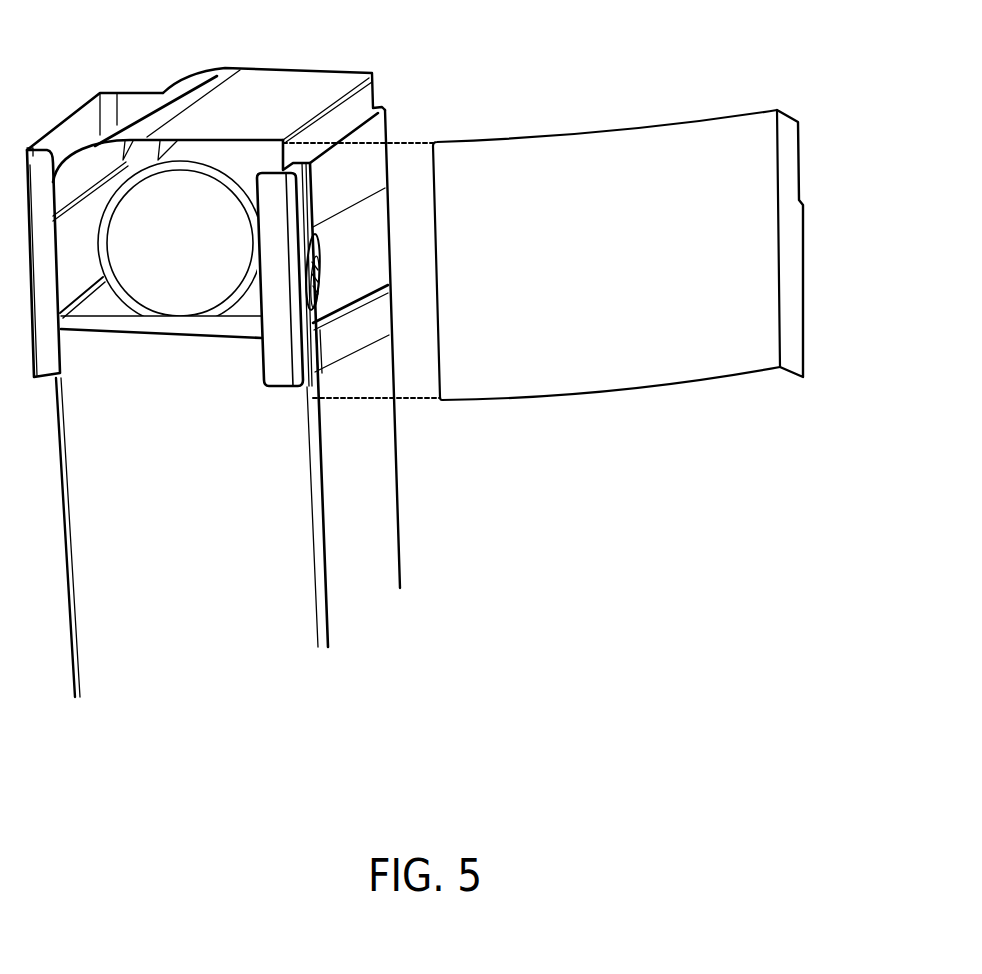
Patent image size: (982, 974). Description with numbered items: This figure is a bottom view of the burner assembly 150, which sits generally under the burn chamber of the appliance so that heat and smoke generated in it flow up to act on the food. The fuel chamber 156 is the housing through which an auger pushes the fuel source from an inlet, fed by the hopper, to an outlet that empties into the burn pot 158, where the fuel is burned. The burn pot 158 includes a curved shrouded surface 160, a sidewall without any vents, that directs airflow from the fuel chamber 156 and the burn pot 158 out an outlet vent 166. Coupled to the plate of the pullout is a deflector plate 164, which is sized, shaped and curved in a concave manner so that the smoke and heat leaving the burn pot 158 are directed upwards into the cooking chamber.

The burner assembly 150 is at (664, 562).
The fuel chamber 156 is at (217, 506).
The burn pot 158 is at (211, 268).
The shrouded surface 160 is at (200, 92).
The deflector plate 164 is at (639, 272).
The outlet vent 166 is at (321, 247).